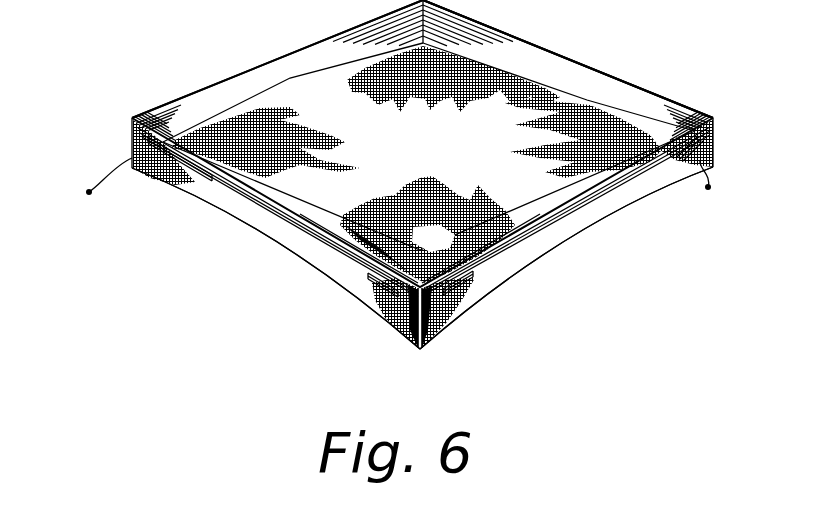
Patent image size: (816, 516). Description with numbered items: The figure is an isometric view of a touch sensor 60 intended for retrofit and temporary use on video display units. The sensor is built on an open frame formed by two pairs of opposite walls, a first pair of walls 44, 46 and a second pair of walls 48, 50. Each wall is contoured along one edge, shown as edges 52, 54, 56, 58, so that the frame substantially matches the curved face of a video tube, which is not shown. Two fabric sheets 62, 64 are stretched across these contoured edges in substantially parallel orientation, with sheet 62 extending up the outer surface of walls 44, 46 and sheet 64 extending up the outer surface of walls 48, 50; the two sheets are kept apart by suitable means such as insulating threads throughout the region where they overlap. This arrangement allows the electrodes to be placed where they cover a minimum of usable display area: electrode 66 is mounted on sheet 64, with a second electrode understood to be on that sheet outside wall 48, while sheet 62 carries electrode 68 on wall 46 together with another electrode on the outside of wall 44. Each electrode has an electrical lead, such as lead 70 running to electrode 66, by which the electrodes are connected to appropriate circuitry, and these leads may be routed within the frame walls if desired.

The touch sensor 60 is at (133, 62).
The wall 44 is at (241, 72).
The wall 48 is at (567, 57).
The contoured edge 52 is at (283, 78).
The contoured edge 58 is at (590, 100).
The fabric sheet 62 is at (421, 125).
The wall 46 is at (429, 163).
The wall 50 is at (258, 185).
The electrical lead 70 is at (112, 185).
The contoured edge 54 is at (645, 197).
The electrode 66 is at (205, 177).
The fabric sheet 64 is at (368, 285).
The contoured edge 56 is at (243, 223).
The electrode 68 is at (557, 225).